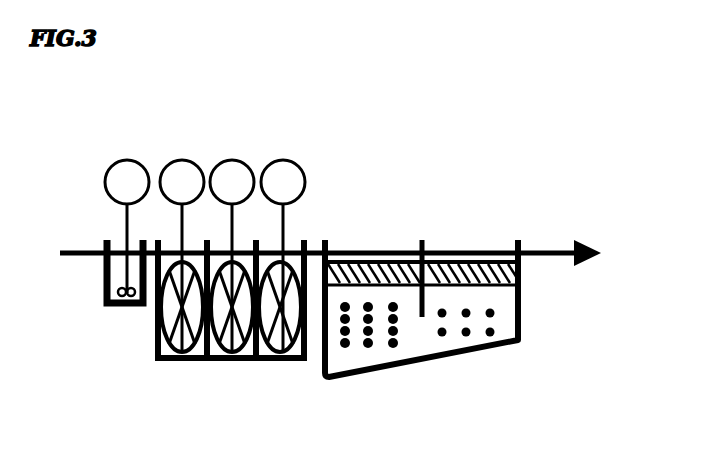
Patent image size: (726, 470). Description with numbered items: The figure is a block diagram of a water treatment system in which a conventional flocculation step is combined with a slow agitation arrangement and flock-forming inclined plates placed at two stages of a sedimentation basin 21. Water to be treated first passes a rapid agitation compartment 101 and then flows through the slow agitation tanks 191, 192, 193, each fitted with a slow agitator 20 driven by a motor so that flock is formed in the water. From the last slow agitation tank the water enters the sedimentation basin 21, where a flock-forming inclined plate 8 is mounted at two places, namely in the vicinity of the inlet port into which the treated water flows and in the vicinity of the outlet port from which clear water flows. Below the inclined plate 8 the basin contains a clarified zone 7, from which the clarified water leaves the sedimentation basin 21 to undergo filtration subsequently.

The slow agitator 20 is at (205, 233).
The compartment of rapid agitation tank 101 is at (124, 293).
The slow agitation tank 191 is at (182, 319).
The slow agitation tank 192 is at (231, 319).
The slow agitation tank 193 is at (278, 319).
The sedimentation basin 21 is at (348, 377).
The flock-forming inclined plate 8 is at (450, 263).
The clarified zone 7 is at (413, 337).